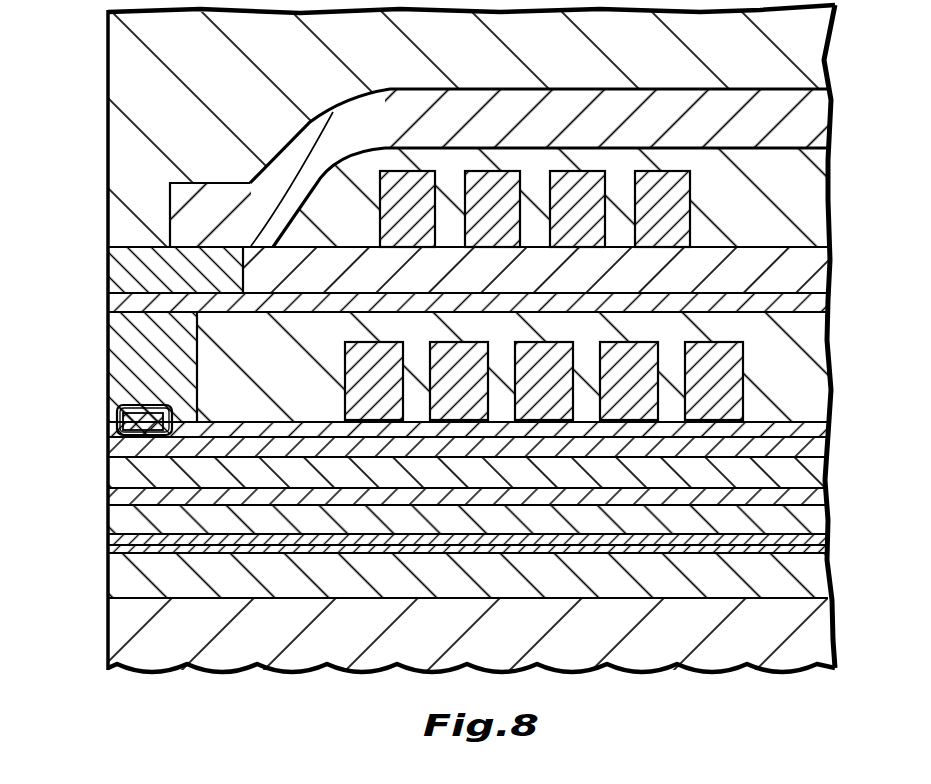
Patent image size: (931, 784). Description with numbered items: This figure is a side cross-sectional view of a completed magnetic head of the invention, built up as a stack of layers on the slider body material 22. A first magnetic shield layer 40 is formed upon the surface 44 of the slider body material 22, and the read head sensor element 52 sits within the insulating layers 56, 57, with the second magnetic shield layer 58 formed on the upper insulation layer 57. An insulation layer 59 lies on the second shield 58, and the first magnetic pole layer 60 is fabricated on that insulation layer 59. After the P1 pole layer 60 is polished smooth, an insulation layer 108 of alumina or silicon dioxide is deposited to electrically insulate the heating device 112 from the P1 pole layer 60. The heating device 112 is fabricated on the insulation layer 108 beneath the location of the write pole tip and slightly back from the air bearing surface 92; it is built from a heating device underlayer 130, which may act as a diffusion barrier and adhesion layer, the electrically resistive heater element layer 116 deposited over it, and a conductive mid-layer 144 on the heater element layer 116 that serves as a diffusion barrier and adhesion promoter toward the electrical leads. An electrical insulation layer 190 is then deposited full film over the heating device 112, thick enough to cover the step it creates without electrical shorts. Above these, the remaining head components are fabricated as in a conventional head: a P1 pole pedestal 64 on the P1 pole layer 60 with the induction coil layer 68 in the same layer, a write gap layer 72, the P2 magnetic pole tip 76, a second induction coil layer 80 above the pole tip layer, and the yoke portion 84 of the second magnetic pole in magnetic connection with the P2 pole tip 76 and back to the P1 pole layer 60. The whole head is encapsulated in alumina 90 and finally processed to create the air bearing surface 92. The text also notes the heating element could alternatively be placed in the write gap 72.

The slider body material 22 is at (122, 637).
The first magnetic shield layer (S1) 40 is at (112, 584).
The surface of the slider body material 44 is at (226, 599).
The read head sensor element 52 is at (112, 548).
The insulating layer 56 is at (312, 551).
The upper insulation layer 57 is at (449, 538).
The second magnetic shield layer (S2) 58 is at (112, 521).
The insulation layer 59 is at (112, 497).
The first magnetic pole (P1) layer 60 is at (110, 470).
The P1 pole pedestal 64 is at (112, 336).
The induction coil layer 68 is at (772, 331).
The write gap layer 72 is at (110, 303).
The P2 magnetic pole tip 76 is at (110, 266).
The second induction coil layer 80 is at (357, 198).
The yoke portion of the second magnetic pole 84 is at (307, 162).
The alumina encapsulation 90 is at (582, 66).
The air bearing surface (ABS) 92 is at (108, 132).
The insulation layer 108 is at (118, 446).
The heating device 112 is at (84, 368).
The heater element layer 116 is at (117, 412).
The heating device underlayer 130 is at (167, 437).
The mid-layer 144 is at (165, 407).
The electrical insulation layer 190 is at (297, 430).